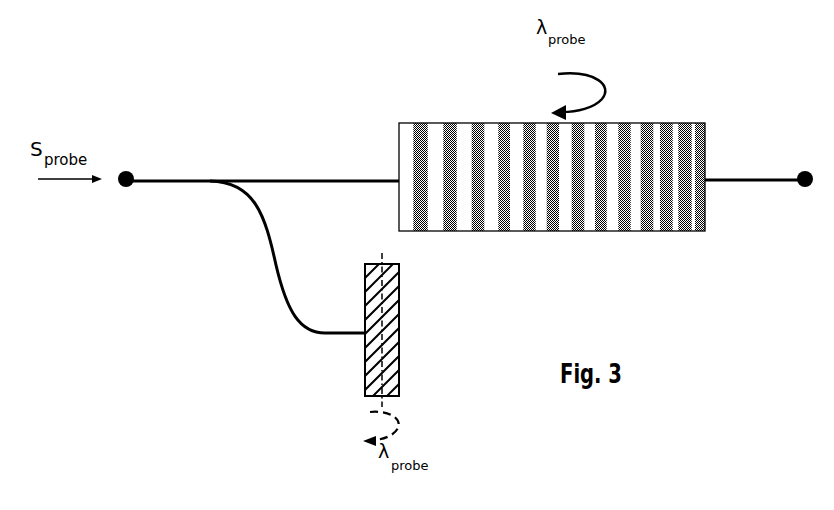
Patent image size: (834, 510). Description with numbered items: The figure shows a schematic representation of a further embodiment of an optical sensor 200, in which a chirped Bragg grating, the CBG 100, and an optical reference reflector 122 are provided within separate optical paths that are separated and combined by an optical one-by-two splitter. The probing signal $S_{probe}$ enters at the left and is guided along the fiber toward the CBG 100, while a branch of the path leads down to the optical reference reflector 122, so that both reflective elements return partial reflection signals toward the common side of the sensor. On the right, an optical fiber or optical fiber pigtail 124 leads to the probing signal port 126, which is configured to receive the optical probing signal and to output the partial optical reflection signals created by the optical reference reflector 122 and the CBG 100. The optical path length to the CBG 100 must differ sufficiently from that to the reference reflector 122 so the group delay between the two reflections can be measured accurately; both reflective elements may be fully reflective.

The optical sensor 200 is at (348, 109).
The chirped Bragg grating 100 is at (675, 119).
The optical reference reflector 122 is at (394, 307).
The optical fiber pigtail 124 is at (775, 184).
The probing signal port 126 is at (797, 172).